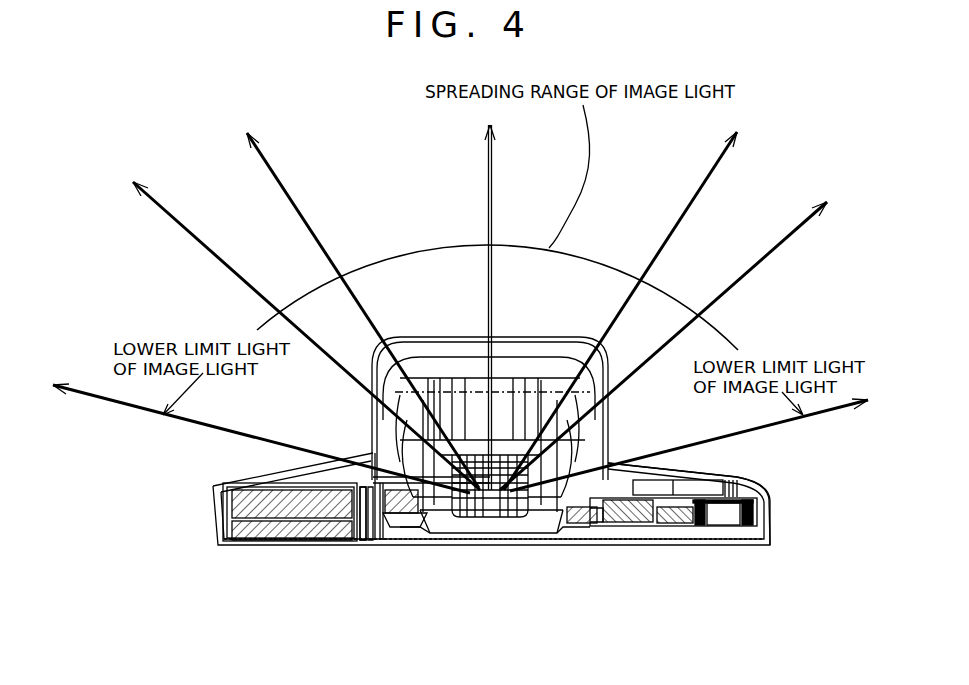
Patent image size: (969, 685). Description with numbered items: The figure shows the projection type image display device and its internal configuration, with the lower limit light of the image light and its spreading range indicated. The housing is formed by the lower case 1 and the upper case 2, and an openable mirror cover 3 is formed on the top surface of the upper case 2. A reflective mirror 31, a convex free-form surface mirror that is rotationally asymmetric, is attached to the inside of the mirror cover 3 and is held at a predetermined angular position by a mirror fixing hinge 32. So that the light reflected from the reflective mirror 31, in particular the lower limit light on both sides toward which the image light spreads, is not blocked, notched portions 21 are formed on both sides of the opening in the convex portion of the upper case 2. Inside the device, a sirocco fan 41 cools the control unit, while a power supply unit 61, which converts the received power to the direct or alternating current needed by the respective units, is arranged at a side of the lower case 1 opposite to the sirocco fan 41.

The lower case 1 is at (215, 530).
The upper case 2 is at (737, 478).
The mirror cover 3 is at (533, 343).
The reflective mirror 31 is at (450, 397).
The mirror fixing hinge 32 is at (565, 517).
The notched portions 21 is at (345, 498).
The sirocco fan 41 is at (657, 517).
The power supply unit 61 is at (275, 500).